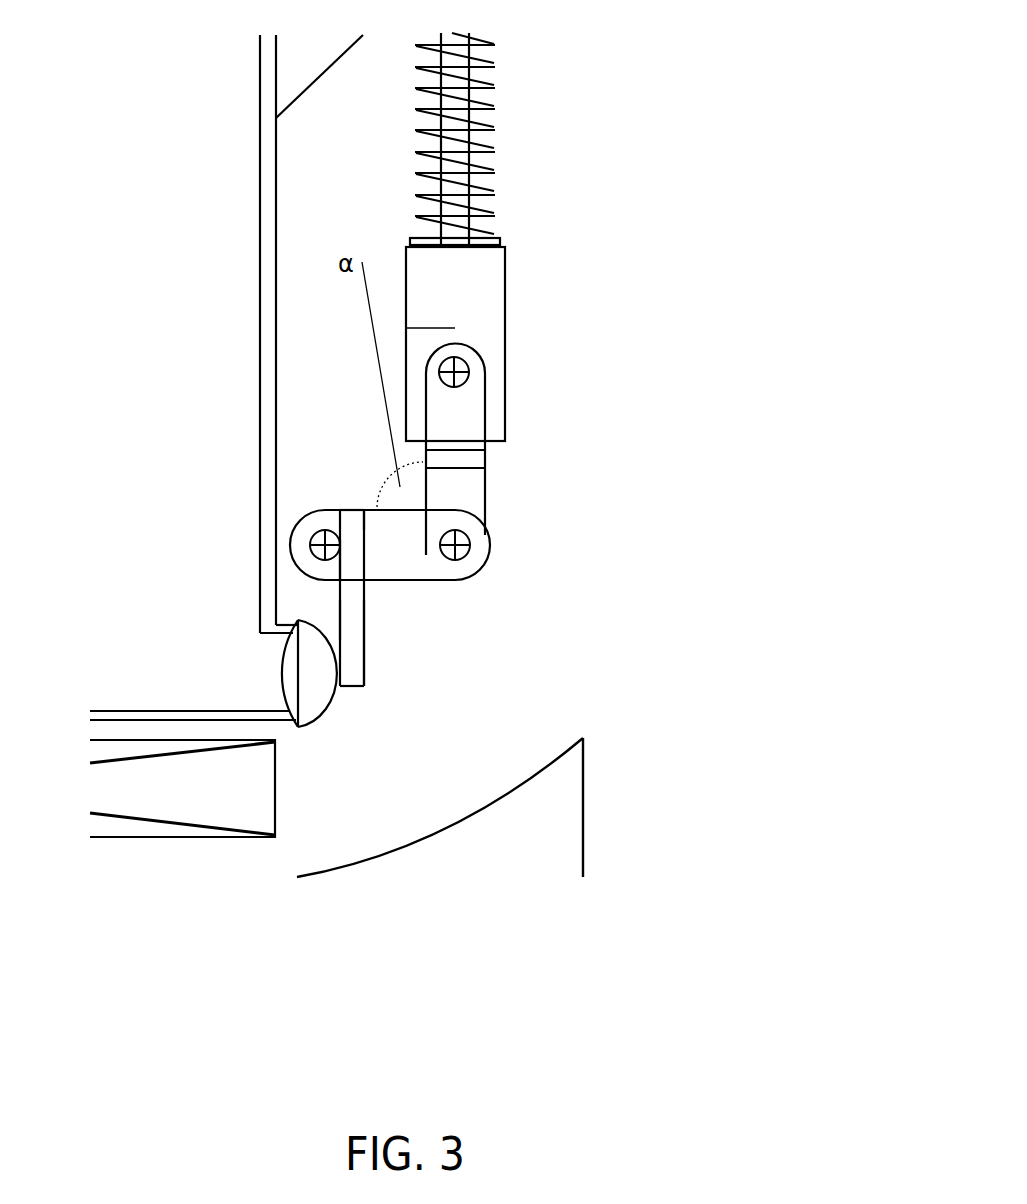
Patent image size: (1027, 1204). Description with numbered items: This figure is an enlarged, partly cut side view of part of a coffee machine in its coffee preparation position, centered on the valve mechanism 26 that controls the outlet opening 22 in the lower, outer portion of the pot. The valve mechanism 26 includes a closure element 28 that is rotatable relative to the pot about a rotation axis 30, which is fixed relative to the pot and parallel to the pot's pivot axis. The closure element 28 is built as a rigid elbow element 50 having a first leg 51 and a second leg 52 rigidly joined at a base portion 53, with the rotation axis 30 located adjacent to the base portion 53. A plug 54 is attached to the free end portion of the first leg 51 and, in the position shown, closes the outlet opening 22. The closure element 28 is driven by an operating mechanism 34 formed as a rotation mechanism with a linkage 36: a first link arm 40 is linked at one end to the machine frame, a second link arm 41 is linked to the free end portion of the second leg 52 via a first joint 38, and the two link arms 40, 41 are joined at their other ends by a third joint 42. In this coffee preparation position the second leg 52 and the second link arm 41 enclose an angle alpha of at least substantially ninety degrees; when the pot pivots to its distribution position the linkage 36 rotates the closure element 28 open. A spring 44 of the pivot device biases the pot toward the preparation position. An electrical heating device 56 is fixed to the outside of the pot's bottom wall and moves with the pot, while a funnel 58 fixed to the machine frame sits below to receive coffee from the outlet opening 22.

The outlet opening 22 is at (253, 670).
The valve mechanism 26 is at (374, 620).
The closure element 28 is at (347, 612).
The rotation axis 30 is at (340, 560).
The operating mechanism 34 is at (510, 286).
The linkage 36 is at (455, 328).
The first joint 38 is at (490, 555).
The first link arm 40 is at (475, 304).
The second link arm 41 is at (475, 489).
The third joint 42 is at (470, 375).
The spring 44 is at (492, 108).
The elbow element 50 is at (360, 514).
The first leg 51 is at (360, 650).
The second leg 52 is at (392, 522).
The base portion 53 is at (352, 508).
The plug 54 is at (292, 672).
The electrical heating device 56 is at (150, 792).
The funnel 58 is at (527, 835).